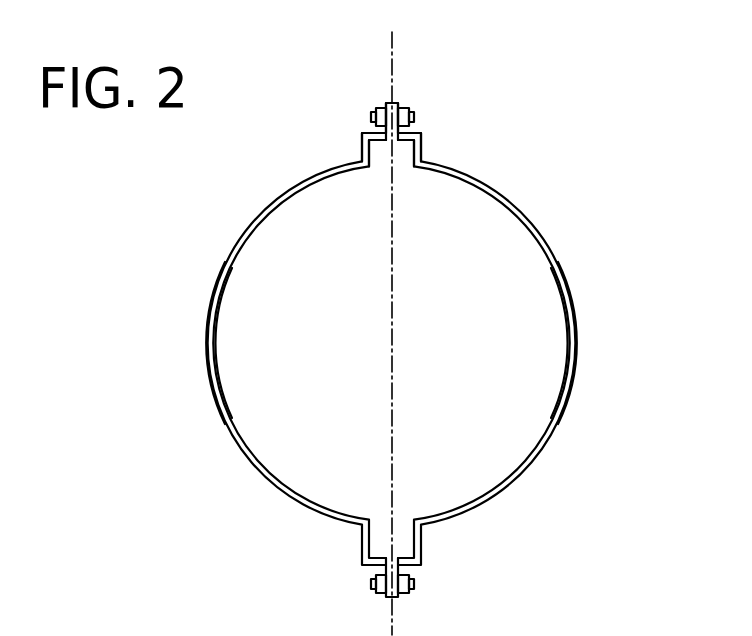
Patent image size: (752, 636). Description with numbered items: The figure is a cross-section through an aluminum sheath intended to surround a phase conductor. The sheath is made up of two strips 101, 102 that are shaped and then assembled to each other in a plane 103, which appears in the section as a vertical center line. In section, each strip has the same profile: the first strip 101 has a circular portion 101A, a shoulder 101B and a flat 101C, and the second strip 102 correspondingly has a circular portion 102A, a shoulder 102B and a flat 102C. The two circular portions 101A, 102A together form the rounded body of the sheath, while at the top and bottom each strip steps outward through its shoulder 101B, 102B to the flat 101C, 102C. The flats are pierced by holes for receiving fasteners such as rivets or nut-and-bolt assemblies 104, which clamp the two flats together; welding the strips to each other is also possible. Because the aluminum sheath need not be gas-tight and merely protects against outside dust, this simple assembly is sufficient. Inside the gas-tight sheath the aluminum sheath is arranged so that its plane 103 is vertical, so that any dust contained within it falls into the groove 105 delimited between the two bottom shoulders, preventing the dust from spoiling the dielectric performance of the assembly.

The strip 101 is at (218, 259).
The circular portion 101A is at (212, 390).
The shoulder 101B is at (362, 136).
The flat 101C is at (390, 103).
The strip 102 is at (572, 259).
The circular portion 102A is at (575, 377).
The shoulder 102B is at (423, 141).
The flat 102C is at (393, 103).
The plane 103 is at (393, 293).
The nut-and-bolt assembly 104 is at (409, 116).
The groove 105 is at (390, 549).